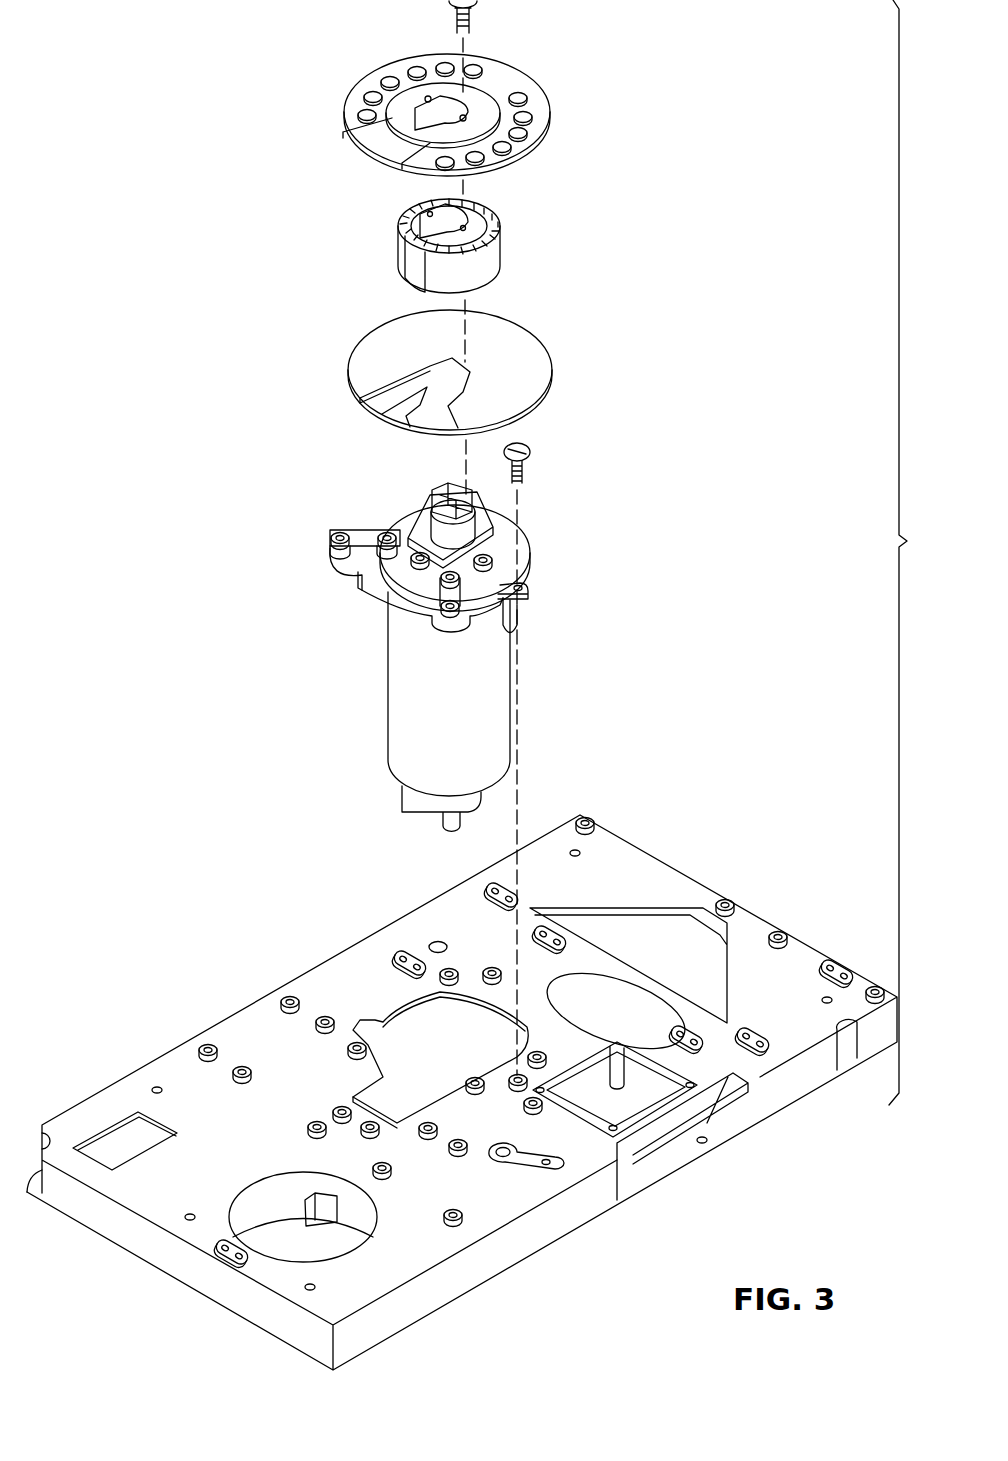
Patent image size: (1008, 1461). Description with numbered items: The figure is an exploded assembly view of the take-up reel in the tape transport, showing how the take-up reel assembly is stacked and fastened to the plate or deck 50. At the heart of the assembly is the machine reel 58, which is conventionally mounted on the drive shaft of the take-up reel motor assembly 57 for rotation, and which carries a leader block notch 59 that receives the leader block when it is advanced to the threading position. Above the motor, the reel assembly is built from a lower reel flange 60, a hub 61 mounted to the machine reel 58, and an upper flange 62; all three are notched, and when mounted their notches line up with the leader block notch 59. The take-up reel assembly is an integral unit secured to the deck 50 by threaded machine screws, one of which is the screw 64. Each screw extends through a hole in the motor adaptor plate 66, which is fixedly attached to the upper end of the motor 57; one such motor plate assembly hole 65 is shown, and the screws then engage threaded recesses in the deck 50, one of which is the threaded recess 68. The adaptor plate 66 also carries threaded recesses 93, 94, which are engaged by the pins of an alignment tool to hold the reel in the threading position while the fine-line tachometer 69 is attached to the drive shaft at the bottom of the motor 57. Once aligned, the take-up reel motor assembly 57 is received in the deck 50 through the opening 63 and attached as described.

The deck 50 is at (143, 1075).
The take-up reel motor assembly 57 is at (388, 695).
The machine reel 58 is at (435, 500).
The leader block notch 59 is at (430, 522).
The lower reel flange 60 is at (552, 378).
The hub 61 is at (512, 243).
The upper flange 62 is at (548, 122).
The opening 63 is at (428, 1032).
The threaded machine screw 64 is at (530, 456).
The motor plate assembly hole 65 is at (530, 597).
The motor adaptor plate 66 is at (370, 585).
The threaded recess 68 is at (518, 1078).
The fine-line tachometer 69 is at (402, 805).
The threaded recess 93 is at (367, 568).
The threaded recess 94 is at (510, 620).